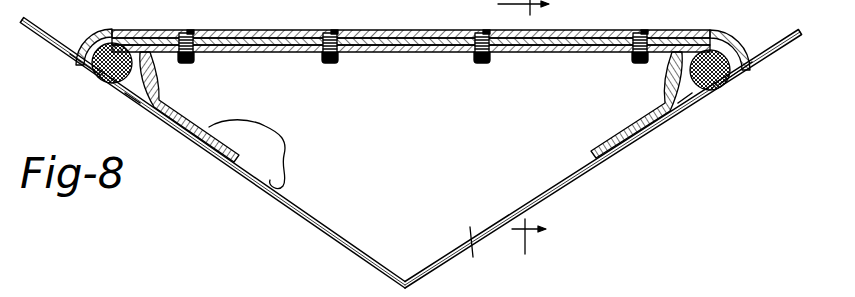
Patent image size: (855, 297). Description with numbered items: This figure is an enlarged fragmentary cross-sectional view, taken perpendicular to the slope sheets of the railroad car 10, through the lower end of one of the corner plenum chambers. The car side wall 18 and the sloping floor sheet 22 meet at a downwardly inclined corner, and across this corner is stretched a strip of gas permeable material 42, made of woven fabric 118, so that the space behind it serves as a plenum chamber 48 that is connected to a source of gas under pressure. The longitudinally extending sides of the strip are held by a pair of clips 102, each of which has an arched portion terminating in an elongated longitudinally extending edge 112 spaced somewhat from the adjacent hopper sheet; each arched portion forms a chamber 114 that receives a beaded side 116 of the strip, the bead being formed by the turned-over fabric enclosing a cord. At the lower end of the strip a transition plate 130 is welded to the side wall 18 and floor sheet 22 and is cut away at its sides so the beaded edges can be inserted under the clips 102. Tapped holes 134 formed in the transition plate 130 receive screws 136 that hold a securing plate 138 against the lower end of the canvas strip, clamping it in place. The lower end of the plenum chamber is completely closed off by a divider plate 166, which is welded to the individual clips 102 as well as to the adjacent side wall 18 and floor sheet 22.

The railroad car 10 is at (523, 127).
The car side wall 18 is at (357, 256).
The sloping floor sheet 22 is at (451, 260).
The gas permeable material 42 is at (413, 48).
The plenum chamber 48 is at (258, 166).
The clip 102 is at (208, 130).
The longitudinally extending edge 112 is at (78, 60).
The chamber 114 is at (128, 98).
The beaded side 116 is at (108, 83).
The woven fabric 118 is at (427, 45).
The transition plate 130 is at (384, 53).
The tapped hole 134 is at (192, 54).
The screw 136 is at (180, 63).
The securing plate 138 is at (240, 30).
The divider plate 166 is at (472, 255).